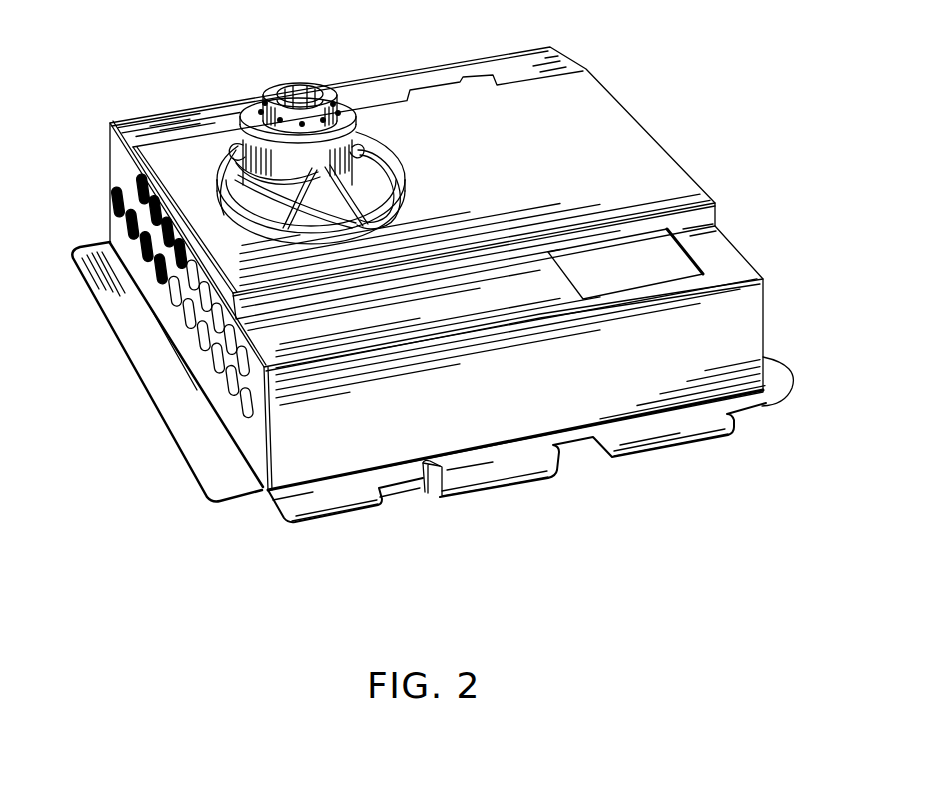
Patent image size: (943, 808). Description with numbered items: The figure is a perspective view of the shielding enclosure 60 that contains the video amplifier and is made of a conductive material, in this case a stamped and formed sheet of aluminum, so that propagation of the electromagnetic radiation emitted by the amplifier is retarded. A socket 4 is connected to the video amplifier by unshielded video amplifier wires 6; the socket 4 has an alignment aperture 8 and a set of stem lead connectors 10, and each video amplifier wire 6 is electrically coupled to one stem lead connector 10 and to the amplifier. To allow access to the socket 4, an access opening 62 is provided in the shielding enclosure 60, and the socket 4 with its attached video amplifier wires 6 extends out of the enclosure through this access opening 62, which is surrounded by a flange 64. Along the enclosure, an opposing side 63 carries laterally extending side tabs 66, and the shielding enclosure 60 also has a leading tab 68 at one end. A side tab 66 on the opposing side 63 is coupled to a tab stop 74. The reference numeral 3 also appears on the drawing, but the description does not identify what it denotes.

The ventilation slots 3 is at (178, 333).
The socket 4 is at (392, 123).
The video amplifier wires 6 is at (230, 152).
The alignment aperture 8 is at (301, 86).
The stem lead connectors 10 is at (278, 92).
The shielding enclosure 60 is at (657, 123).
The access opening 62 is at (401, 191).
The opposing side 63 is at (766, 402).
The flange 64 is at (410, 180).
The side tabs 66 is at (342, 498).
The leading tab 68 is at (188, 437).
The tab stop 74 is at (430, 490).